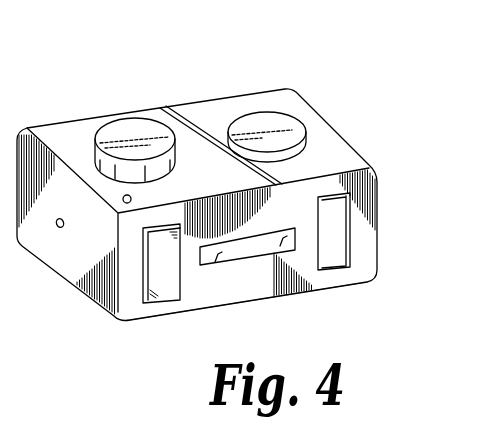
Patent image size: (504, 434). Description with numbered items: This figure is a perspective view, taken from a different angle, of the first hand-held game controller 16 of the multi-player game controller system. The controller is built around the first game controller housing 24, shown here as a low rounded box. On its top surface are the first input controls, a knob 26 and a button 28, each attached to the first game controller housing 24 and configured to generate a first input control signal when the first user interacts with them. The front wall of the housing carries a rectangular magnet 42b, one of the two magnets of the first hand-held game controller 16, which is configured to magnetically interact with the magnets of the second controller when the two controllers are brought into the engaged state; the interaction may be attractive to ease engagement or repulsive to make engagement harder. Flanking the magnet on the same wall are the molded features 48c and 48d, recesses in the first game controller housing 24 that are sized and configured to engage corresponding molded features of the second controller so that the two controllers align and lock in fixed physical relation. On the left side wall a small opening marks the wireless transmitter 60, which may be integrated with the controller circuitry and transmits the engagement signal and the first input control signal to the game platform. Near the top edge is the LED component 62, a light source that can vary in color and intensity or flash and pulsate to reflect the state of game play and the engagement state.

The first hand-held game controller 16 is at (183, 76).
The first game controller housing 24 is at (224, 299).
The knob 26 is at (123, 128).
The button 28 is at (287, 125).
The magnet 42b is at (238, 252).
The molded feature 48c is at (168, 289).
The molded feature 48d is at (330, 251).
The wireless transmitter 60 is at (57, 228).
The LED component 62 is at (132, 198).